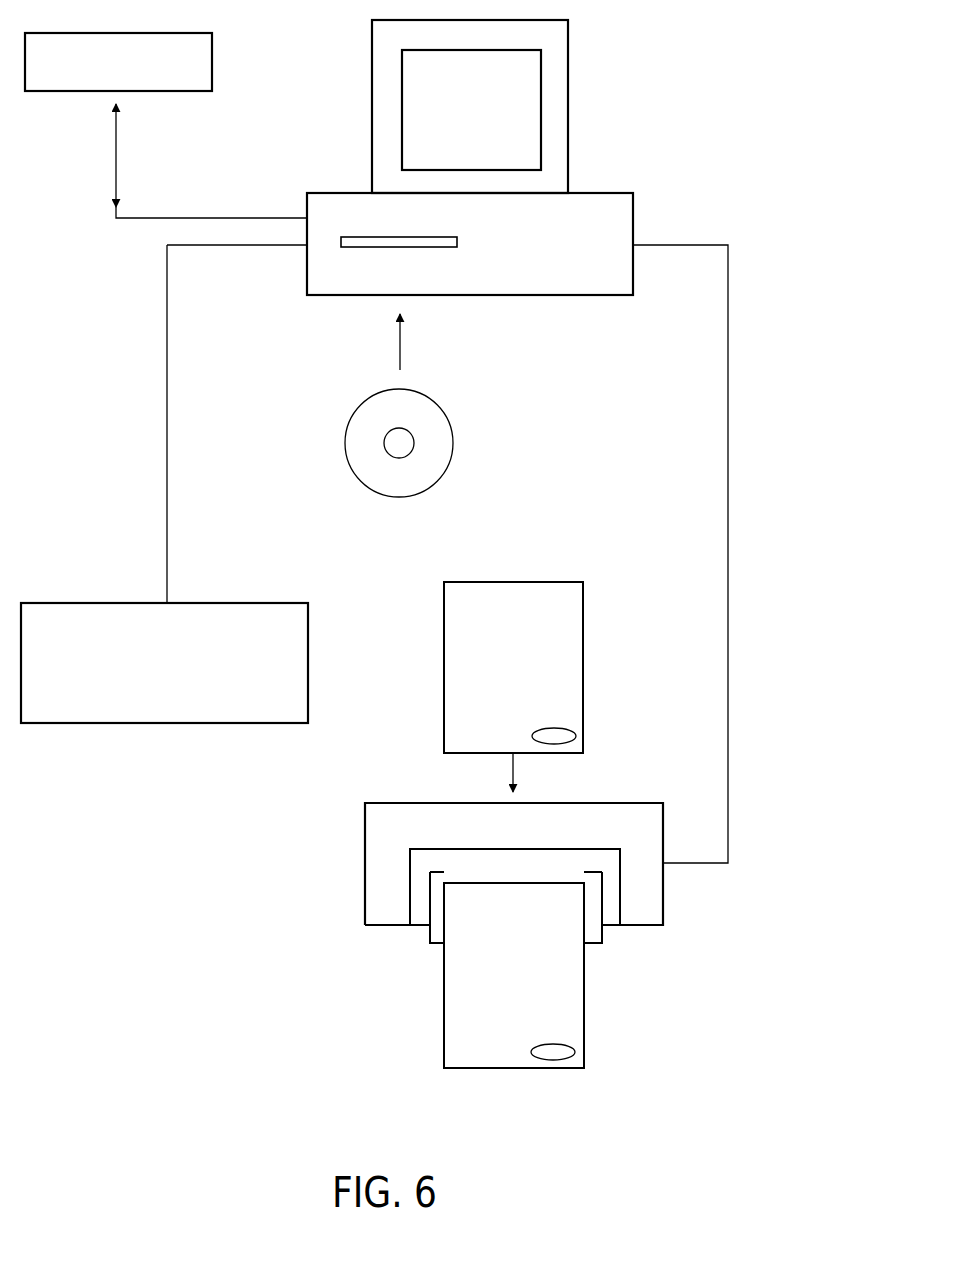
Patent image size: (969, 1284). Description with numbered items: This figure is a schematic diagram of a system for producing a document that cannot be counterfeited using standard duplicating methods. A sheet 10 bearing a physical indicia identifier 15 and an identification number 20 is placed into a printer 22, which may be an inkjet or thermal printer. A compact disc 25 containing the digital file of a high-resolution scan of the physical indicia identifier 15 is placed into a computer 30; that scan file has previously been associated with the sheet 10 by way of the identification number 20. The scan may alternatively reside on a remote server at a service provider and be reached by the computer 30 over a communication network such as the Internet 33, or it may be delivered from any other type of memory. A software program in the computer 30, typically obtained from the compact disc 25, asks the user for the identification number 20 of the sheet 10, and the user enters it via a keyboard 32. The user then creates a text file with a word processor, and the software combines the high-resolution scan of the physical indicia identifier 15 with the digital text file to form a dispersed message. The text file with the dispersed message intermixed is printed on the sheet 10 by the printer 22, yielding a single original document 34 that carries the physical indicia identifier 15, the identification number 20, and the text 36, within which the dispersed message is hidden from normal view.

The sheet 10 is at (529, 575).
The physical indicia identifier 15 is at (567, 727).
The identification number 20 is at (465, 740).
The printer 22 is at (377, 857).
The compact disc 25 is at (443, 437).
The computer 30 is at (633, 205).
The keyboard 32 is at (252, 613).
The Internet 33 is at (212, 47).
The original document 34 is at (570, 990).
The text 36 is at (444, 980).